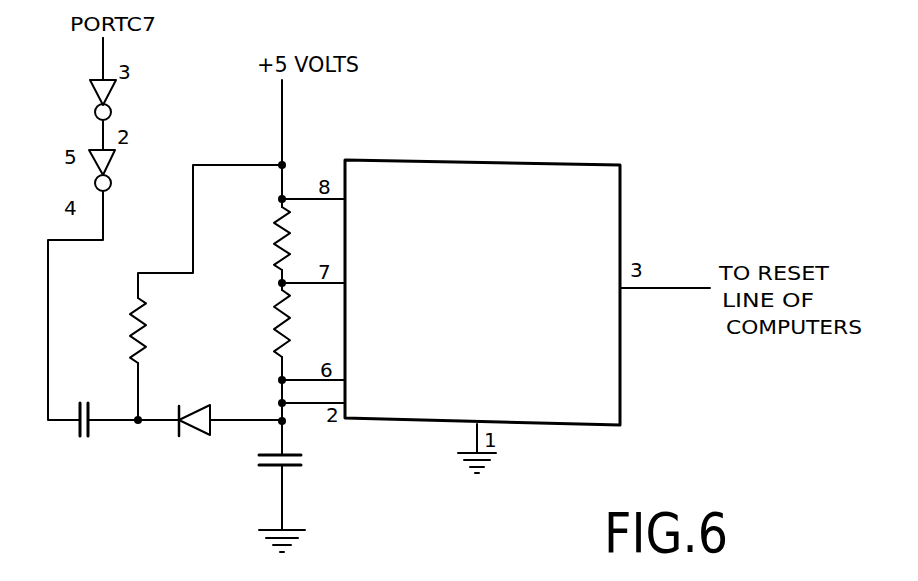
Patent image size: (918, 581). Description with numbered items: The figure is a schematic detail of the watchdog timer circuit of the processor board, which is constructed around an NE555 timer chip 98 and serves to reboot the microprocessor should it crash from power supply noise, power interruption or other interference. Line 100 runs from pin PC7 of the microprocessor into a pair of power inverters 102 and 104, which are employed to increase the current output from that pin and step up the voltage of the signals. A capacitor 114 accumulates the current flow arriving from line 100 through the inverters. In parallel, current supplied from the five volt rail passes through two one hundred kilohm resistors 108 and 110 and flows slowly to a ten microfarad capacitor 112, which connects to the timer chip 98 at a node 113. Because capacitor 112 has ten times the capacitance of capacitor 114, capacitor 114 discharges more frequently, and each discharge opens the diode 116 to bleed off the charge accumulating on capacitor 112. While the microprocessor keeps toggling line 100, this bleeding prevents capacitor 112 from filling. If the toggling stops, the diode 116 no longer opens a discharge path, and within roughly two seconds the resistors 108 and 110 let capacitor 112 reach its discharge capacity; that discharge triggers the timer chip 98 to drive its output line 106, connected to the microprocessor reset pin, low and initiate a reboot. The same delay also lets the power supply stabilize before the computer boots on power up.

The NE555 timer chip 98 is at (482, 316).
The line 100 is at (100, 57).
The power inverter 102 is at (112, 91).
The power inverter 104 is at (109, 164).
The line 106 is at (684, 288).
The resistor 108 is at (277, 248).
The resistor 110 is at (274, 337).
The capacitor 112 is at (251, 460).
The node / input line 113 is at (286, 421).
The capacitor 114 is at (84, 440).
The diode 116 is at (196, 437).